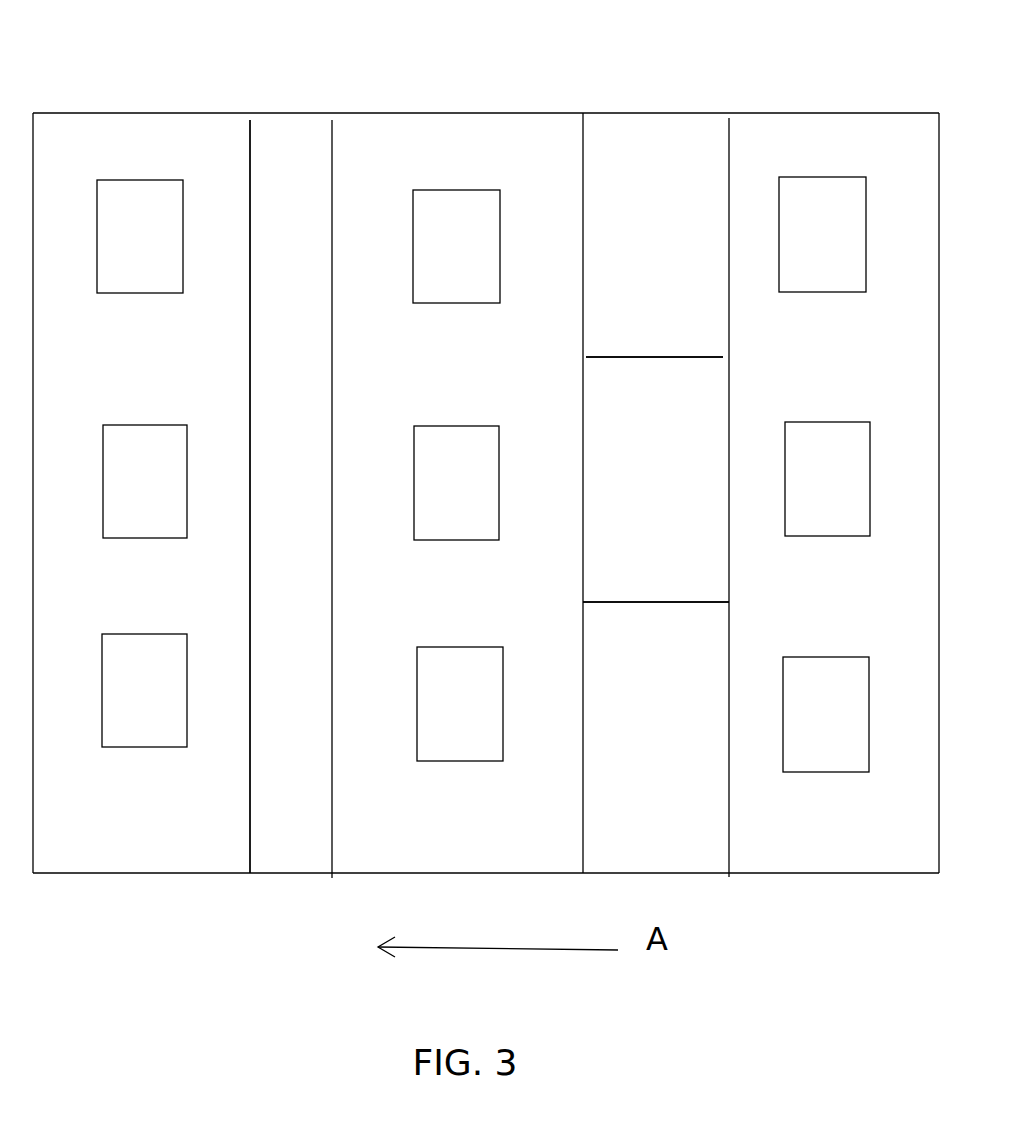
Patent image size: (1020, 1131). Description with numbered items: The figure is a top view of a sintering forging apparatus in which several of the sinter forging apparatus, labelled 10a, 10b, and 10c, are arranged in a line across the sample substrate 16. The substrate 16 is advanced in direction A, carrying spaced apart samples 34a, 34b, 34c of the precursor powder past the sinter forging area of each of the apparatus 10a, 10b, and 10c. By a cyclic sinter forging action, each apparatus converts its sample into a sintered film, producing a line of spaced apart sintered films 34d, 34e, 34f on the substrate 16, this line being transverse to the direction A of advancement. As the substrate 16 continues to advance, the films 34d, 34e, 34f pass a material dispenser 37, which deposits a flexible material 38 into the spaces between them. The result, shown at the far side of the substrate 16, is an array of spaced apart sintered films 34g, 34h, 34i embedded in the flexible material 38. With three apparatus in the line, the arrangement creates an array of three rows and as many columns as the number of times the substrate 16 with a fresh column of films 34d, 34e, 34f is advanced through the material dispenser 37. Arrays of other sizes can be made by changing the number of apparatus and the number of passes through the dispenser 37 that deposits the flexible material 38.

The sinter forging apparatus 10a is at (688, 243).
The sinter forging apparatus 10b is at (627, 483).
The sinter forging apparatus 10c is at (698, 736).
The sample substrate 16 is at (463, 142).
The sample 34a is at (803, 239).
The sample 34b is at (808, 523).
The sample 34c is at (805, 728).
The sintered film 34d is at (437, 253).
The sintered film 34e is at (429, 498).
The sintered film 34f is at (437, 719).
The sintered film embedded in flexible material 34g is at (170, 247).
The sintered film embedded in flexible material 34h is at (120, 489).
The sintered film embedded in flexible material 34i is at (118, 709).
The material dispenser 37 is at (272, 473).
The flexible material 38 is at (89, 138).